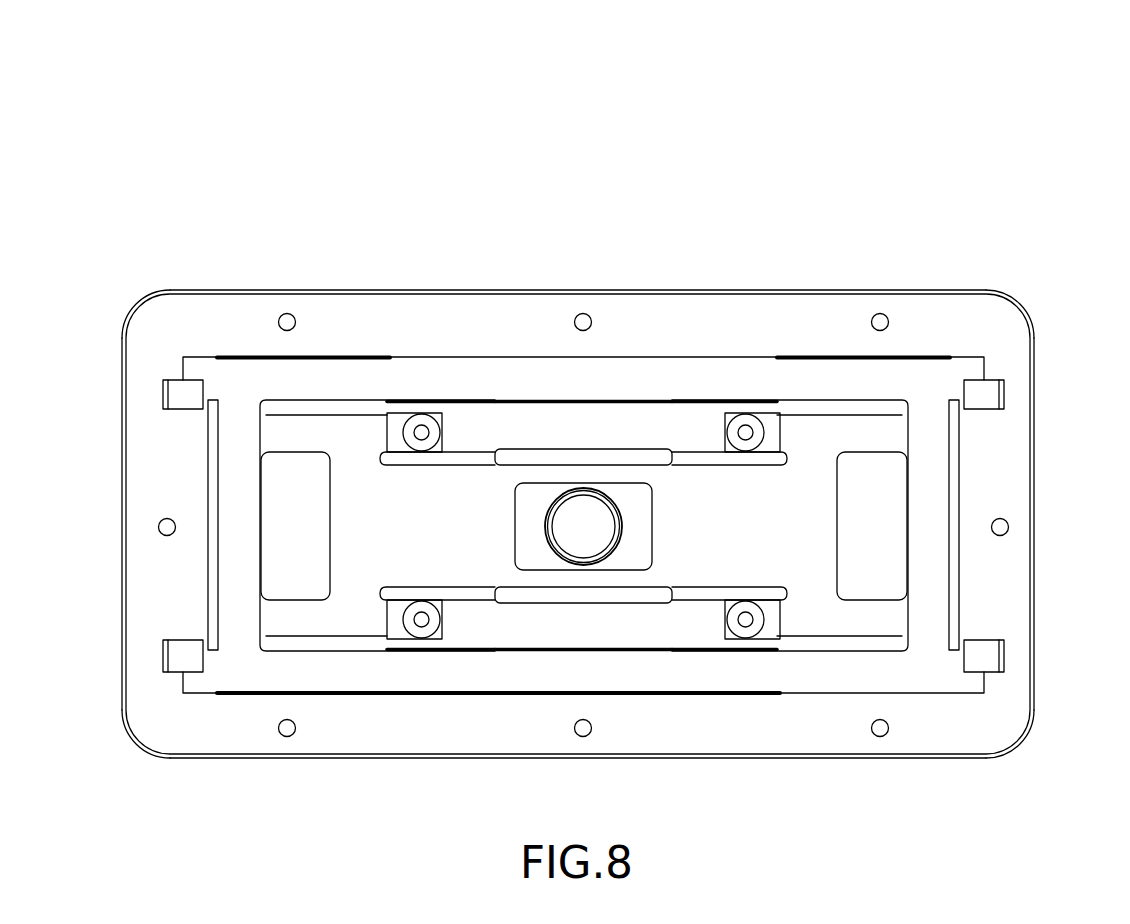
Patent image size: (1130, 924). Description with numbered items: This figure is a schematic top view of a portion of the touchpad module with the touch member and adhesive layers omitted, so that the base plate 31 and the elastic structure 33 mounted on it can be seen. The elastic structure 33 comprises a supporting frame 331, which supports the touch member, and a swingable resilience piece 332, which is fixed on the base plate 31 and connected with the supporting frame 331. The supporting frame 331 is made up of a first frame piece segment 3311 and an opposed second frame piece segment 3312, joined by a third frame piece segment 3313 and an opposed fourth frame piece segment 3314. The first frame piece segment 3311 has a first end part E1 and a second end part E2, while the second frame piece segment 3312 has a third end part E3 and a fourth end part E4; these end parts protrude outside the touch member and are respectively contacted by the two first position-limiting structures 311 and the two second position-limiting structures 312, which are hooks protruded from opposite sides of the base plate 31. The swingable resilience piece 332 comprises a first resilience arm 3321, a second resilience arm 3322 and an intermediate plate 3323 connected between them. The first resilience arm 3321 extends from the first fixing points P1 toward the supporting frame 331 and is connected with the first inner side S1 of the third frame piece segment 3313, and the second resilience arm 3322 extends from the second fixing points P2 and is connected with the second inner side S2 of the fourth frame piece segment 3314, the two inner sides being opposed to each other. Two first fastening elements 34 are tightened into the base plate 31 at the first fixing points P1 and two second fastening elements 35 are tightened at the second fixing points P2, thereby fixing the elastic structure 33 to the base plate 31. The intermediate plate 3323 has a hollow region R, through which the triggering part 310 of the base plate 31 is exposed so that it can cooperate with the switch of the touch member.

The base plate 31 is at (578, 542).
The elastic structure 33 is at (262, 92).
The supporting frame 331 is at (323, 37).
The first frame piece segment 3311 is at (732, 338).
The second frame piece segment 3312 is at (680, 712).
The third frame piece segment 3313 is at (238, 538).
The fourth frame piece segment 3314 is at (1047, 413).
The first position-limiting structure 311 is at (178, 395).
The second position-limiting structure 312 is at (178, 653).
The swingable resilience piece 332 is at (323, 182).
The first resilience arm 3321 is at (368, 434).
The second resilience arm 3322 is at (637, 453).
The intermediate plate 3323 is at (527, 449).
The triggering part 310 is at (580, 530).
The first fastening element 34 is at (448, 646).
The second fastening element 35 is at (777, 646).
The first fixing point P1 is at (435, 623).
The second fixing point P2 is at (755, 623).
The first end part E1 is at (193, 368).
The second end part E2 is at (970, 370).
The third end part E3 is at (193, 683).
The fourth end part E4 is at (972, 683).
The first inner side S1 is at (275, 498).
The second inner side S2 is at (905, 505).
The hollow region R is at (664, 515).